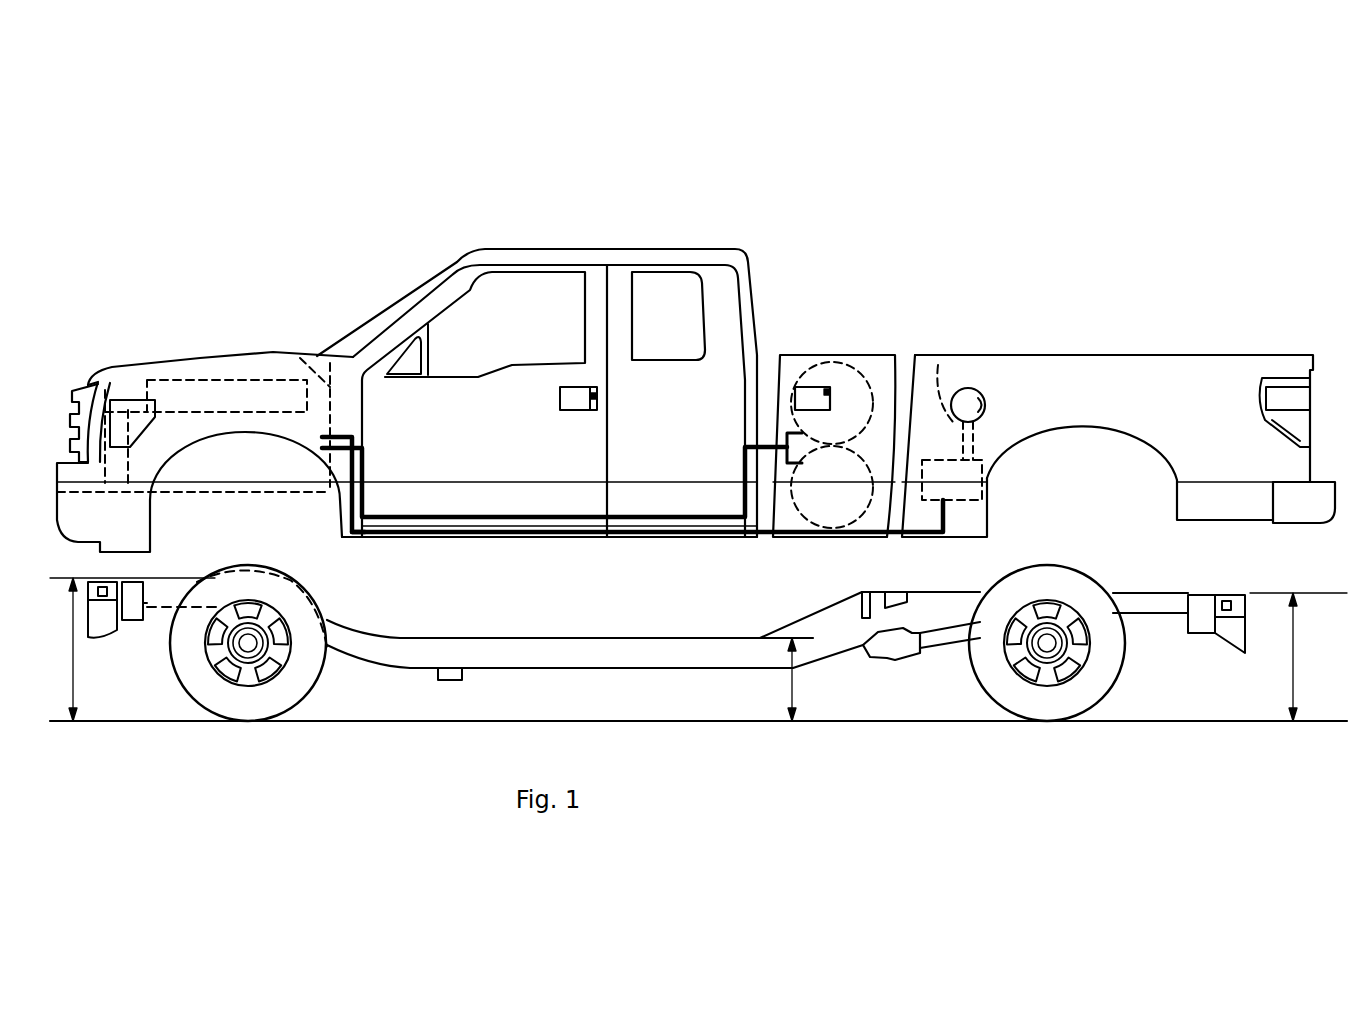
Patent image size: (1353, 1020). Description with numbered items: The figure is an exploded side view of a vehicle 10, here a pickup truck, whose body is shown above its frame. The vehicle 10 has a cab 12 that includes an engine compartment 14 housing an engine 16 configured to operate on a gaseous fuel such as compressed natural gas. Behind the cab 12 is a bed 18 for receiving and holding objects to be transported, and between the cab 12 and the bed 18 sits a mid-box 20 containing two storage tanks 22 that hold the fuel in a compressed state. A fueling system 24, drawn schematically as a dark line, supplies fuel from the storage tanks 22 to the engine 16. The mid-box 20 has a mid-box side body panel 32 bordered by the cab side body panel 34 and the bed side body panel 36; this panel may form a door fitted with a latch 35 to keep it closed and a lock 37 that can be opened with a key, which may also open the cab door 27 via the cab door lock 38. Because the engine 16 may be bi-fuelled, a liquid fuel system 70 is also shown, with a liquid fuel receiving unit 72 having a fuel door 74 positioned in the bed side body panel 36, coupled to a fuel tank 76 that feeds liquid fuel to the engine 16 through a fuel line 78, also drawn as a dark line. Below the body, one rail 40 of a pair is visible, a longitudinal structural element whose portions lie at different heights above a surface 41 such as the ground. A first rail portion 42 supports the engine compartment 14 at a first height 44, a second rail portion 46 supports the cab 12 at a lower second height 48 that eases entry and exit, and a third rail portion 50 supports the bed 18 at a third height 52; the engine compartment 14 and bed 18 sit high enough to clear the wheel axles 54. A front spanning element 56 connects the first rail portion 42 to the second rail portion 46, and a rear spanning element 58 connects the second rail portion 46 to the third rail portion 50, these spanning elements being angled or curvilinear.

The vehicle 10 is at (965, 238).
The cab 12 is at (625, 250).
The engine compartment 14 is at (303, 362).
The engine 16 is at (182, 372).
The bed 18 is at (1145, 355).
The mid-box 20 is at (848, 355).
The storage tank 22 is at (873, 365).
The fueling system 24 is at (365, 478).
The cab door 27 is at (598, 282).
The mid-box side body panel 32 is at (875, 444).
The cab side body panel 34 is at (553, 447).
The latch 35 is at (810, 385).
The bed side body panel 36 is at (1170, 389).
The lock 37 is at (826, 388).
The cab door lock 38 is at (598, 395).
The rail 40 is at (592, 647).
The surface 41 is at (863, 721).
The first rail portion 42 is at (178, 583).
The first height 44 is at (73, 655).
The second rail portion 46 is at (470, 645).
The second height 48 is at (792, 680).
The third rail portion 50 is at (1137, 600).
The third height 52 is at (1293, 650).
The wheel axle 54 is at (250, 643).
The front spanning element 56 is at (332, 628).
The rear spanning element 58 is at (827, 625).
The liquid fuel system 70 is at (1022, 412).
The liquid fuel receiving unit 72 is at (936, 360).
The fuel door 74 is at (968, 388).
The fuel tank 76 is at (988, 481).
The fuel line 78 is at (360, 533).